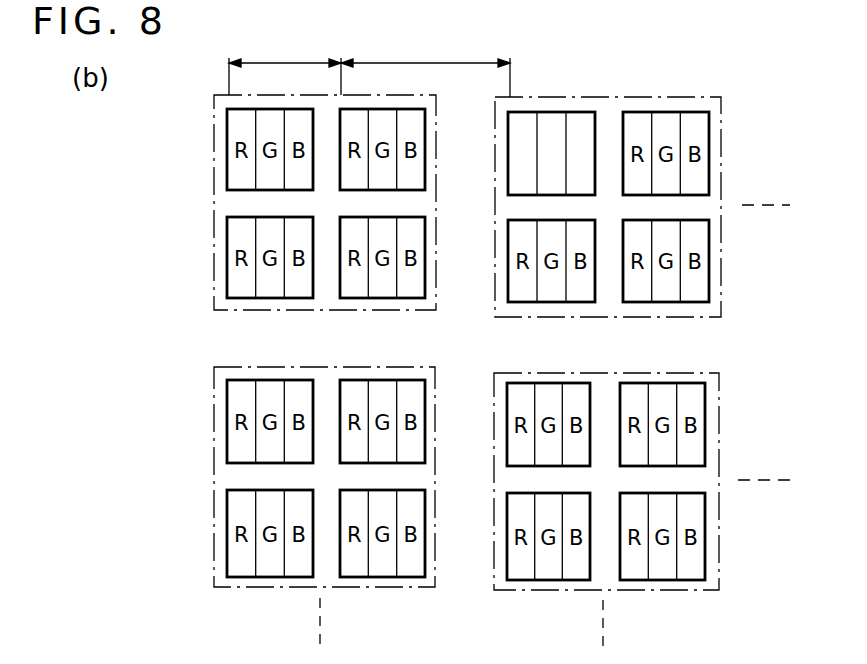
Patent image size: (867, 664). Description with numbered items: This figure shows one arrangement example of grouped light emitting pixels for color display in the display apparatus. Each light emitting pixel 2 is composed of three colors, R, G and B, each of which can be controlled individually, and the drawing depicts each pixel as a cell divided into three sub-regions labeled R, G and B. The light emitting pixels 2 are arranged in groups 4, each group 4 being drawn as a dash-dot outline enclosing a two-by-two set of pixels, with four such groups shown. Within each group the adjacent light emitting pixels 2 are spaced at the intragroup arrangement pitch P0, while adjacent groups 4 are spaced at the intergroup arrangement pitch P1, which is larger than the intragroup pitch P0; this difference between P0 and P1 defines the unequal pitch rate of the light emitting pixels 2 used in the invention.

The light emitting pixel 2 is at (648, 112).
The group of light emitting pixels 4 is at (436, 191).
The intragroup arrangement pitch P0 is at (285, 64).
The intergroup arrangement pitch P1 is at (425, 65).